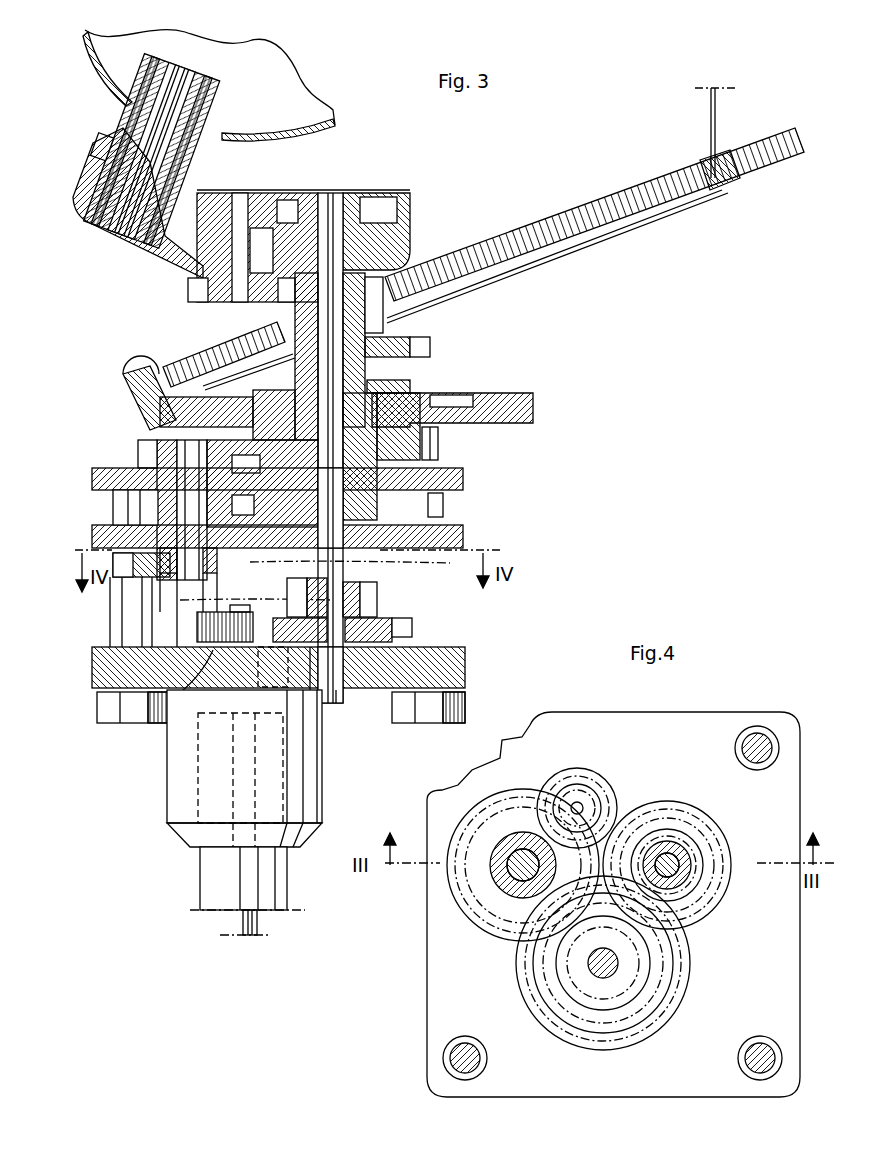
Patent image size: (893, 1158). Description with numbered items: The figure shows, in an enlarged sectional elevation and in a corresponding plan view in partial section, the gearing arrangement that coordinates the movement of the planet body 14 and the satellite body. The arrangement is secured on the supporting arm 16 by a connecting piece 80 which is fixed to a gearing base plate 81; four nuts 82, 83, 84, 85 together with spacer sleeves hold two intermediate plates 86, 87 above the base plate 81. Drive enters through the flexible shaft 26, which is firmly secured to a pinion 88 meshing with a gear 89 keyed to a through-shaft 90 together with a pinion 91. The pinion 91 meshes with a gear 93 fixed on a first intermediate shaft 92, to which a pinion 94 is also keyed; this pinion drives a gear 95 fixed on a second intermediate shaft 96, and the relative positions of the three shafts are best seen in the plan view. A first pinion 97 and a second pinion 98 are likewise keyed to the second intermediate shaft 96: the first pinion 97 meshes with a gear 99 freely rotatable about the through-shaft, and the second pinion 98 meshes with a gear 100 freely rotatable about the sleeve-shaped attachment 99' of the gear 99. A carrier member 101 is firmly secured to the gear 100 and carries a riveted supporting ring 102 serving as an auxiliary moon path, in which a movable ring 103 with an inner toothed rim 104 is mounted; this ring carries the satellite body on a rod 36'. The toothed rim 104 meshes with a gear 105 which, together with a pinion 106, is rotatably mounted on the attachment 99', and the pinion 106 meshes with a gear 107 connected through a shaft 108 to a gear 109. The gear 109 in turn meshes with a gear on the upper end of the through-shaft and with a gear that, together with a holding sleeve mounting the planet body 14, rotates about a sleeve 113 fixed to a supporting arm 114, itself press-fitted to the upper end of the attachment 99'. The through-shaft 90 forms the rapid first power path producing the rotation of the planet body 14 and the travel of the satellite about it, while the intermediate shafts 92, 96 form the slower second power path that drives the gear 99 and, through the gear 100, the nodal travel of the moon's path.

In FIG. 3, the planet body 14 is at (334, 126).
In FIG. 3, the supporting arm 16 is at (210, 877).
In FIG. 3, the flexible shaft 26 is at (240, 926).
In FIG. 4, the flexible shaft 26 is at (577, 800).
In FIG. 3, the rod 36' is at (726, 133).
In FIG. 3, the connecting piece 80 is at (183, 793).
In FIG. 3, the gearing base plate 81 is at (466, 662).
In FIG. 3, the nut 82 is at (104, 720).
In FIG. 3, the nut 83 is at (466, 710).
In FIG. 4, the nut 83 is at (765, 736).
In FIG. 4, the nut 84 is at (750, 1065).
In FIG. 4, the nut 85 is at (455, 1070).
In FIG. 3, the intermediate plate 86 is at (464, 535).
In FIG. 3, the intermediate plate 87 is at (464, 477).
In FIG. 3, the pinion 88 is at (172, 718).
In FIG. 4, the pinion 88 is at (590, 780).
In FIG. 3, the gear 89 is at (412, 628).
In FIG. 4, the gear 89 is at (700, 800).
In FIG. 3, the through-shaft 90 is at (338, 695).
In FIG. 4, the through-shaft 90 is at (667, 853).
In FIG. 3, the pinion 91 is at (370, 598).
In FIG. 4, the pinion 91 is at (680, 840).
In FIG. 3, the first intermediate shaft 92 is at (320, 708).
In FIG. 4, the first intermediate shaft 92 is at (590, 963).
In FIG. 3, the gear 93 is at (200, 596).
In FIG. 4, the gear 93 is at (530, 1010).
In FIG. 3, the pinion 94 is at (420, 563).
In FIG. 4, the pinion 94 is at (556, 984).
In FIG. 3, the gear 95 is at (190, 592).
In FIG. 4, the gear 95 is at (470, 905).
In FIG. 3, the second intermediate shaft 96 is at (172, 436).
In FIG. 4, the second intermediate shaft 96 is at (505, 890).
In FIG. 3, the first pinion 97 is at (130, 508).
In FIG. 3, the second pinion 98 is at (137, 444).
In FIG. 3, the gear 99 is at (465, 505).
In FIG. 3, the sleeve-shaped attachment 99' is at (414, 376).
In FIG. 3, the gear 100 is at (438, 441).
In FIG. 3, the carrier member 101 is at (520, 398).
In FIG. 3, the supporting ring 102 is at (128, 376).
In FIG. 3, the movable ring 103 is at (734, 190).
In FIG. 3, the inner toothed rim 104 is at (625, 185).
In FIG. 3, the gear 105 is at (432, 343).
In FIG. 3, the pinion 106 is at (280, 312).
In FIG. 3, the gear 107 is at (188, 282).
In FIG. 3, the shaft 108 is at (241, 192).
In FIG. 3, the gear 109 is at (287, 199).
In FIG. 3, the sleeve 113 is at (118, 227).
In FIG. 3, the supporting arm 114 is at (406, 226).